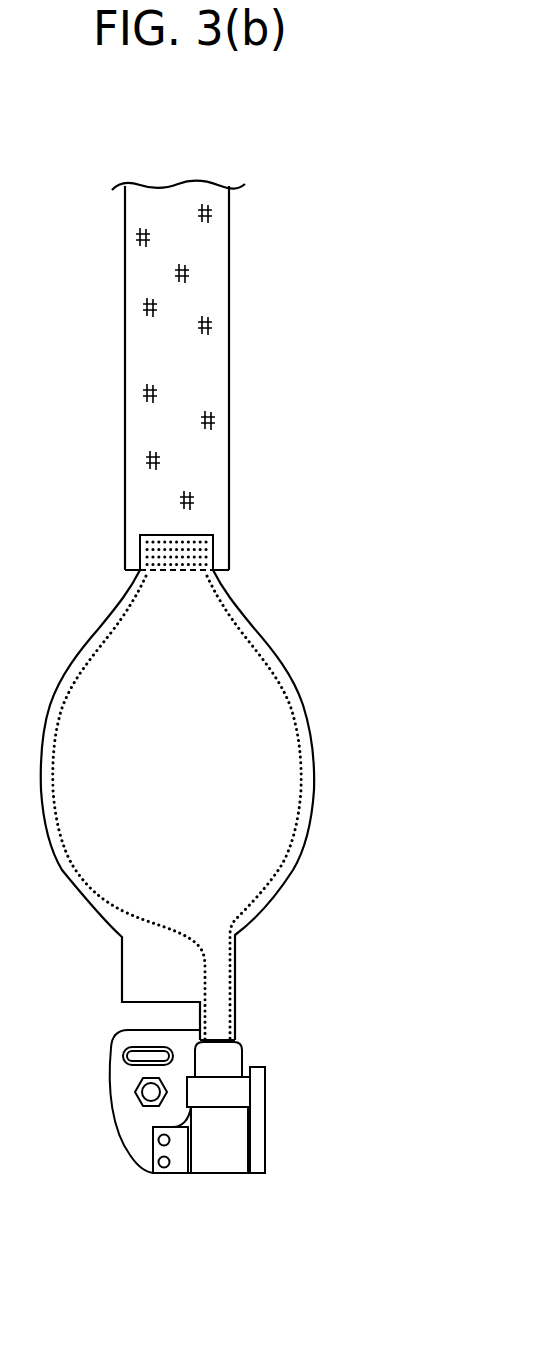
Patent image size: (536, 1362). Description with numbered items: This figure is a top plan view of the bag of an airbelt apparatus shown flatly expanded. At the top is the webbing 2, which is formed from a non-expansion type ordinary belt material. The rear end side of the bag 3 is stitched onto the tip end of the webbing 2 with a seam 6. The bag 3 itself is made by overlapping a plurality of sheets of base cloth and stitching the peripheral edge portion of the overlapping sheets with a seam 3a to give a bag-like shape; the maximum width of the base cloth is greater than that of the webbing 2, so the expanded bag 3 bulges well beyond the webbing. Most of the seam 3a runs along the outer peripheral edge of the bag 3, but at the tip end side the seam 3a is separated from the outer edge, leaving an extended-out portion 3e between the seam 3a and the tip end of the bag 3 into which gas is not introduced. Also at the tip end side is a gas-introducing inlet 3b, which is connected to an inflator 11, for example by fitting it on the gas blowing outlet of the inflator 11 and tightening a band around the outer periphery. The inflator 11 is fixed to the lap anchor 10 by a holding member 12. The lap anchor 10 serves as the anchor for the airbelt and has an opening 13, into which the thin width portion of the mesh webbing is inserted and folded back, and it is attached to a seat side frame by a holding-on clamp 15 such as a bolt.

The webbing 2 is at (215, 352).
The seam 6 is at (203, 541).
The bag 3 is at (315, 730).
The seam 3a is at (50, 750).
The gas-introducing inlet 3b is at (215, 982).
The extended-out portion 3e is at (137, 975).
The inflator 11 is at (230, 1057).
The holding member 12 is at (230, 1093).
The lap anchor 10 is at (138, 1137).
The opening 13 is at (135, 1072).
The holding-on clamp 15 is at (140, 1090).